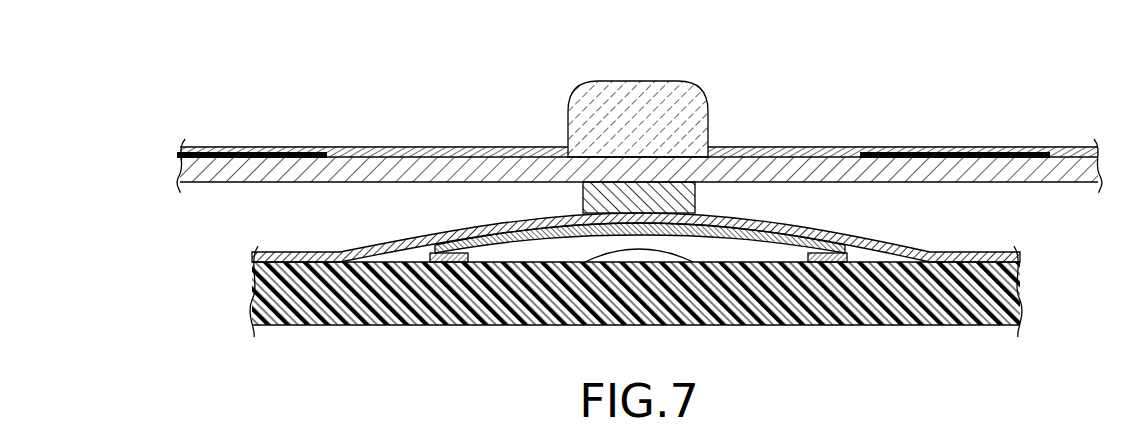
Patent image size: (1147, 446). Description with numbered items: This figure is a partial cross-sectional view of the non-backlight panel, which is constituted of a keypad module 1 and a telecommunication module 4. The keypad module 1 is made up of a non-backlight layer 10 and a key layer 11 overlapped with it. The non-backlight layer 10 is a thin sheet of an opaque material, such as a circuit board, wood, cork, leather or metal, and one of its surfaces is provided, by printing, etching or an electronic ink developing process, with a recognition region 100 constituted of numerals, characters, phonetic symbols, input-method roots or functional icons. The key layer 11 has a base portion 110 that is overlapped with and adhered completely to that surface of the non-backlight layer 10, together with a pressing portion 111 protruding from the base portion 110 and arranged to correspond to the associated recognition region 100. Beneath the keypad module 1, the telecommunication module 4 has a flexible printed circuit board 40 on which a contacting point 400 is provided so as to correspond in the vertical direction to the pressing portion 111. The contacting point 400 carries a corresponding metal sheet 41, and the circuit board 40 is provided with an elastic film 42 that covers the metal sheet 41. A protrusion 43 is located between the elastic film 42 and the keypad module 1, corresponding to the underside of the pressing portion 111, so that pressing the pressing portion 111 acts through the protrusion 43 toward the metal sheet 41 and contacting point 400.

The keypad module 1 is at (363, 126).
The non-backlight layer 10 is at (1043, 172).
The recognition region 100 is at (960, 147).
The key layer 11 is at (762, 57).
The base portion 110 is at (799, 148).
The pressing portion 111 is at (682, 110).
The telecommunication module 4 is at (340, 334).
The flexible printed circuit board 40 is at (878, 305).
The contacting point 400 is at (662, 252).
The metal sheet 41 is at (525, 238).
The elastic film 42 is at (465, 227).
The protrusion 43 is at (697, 190).